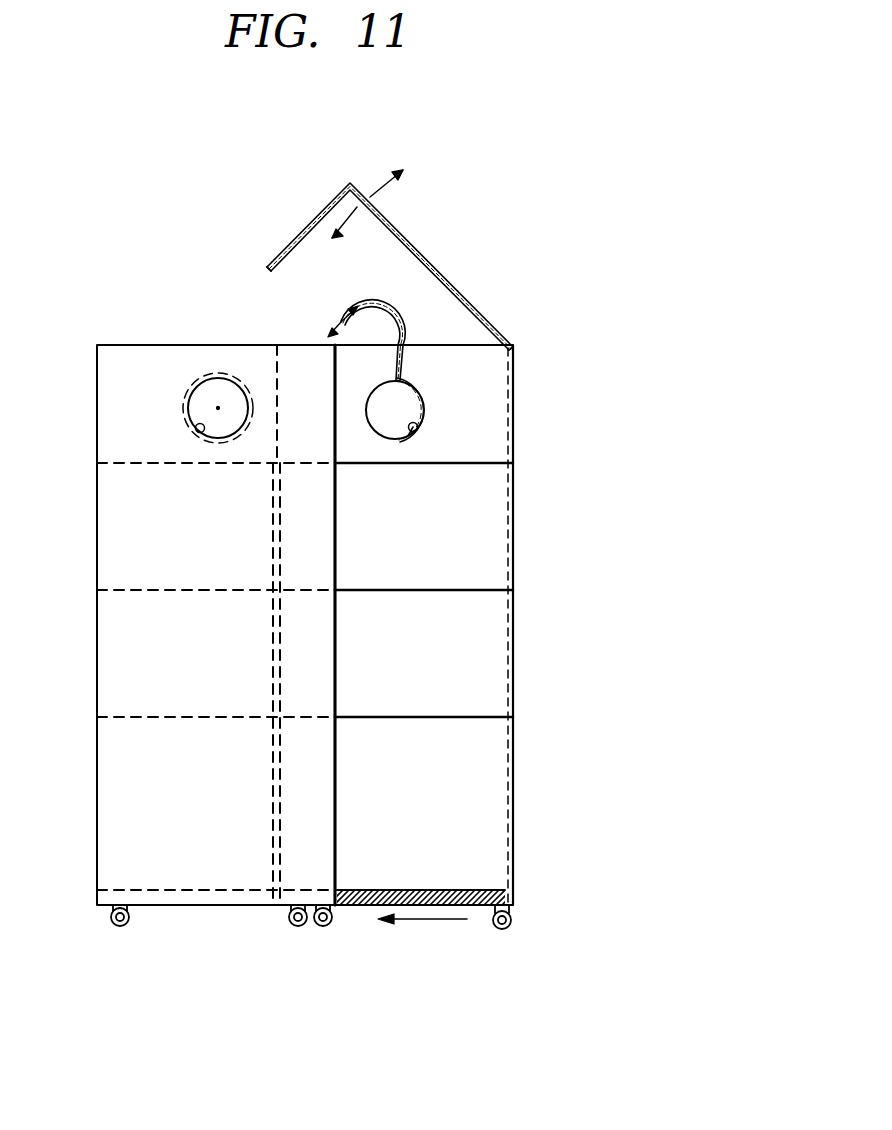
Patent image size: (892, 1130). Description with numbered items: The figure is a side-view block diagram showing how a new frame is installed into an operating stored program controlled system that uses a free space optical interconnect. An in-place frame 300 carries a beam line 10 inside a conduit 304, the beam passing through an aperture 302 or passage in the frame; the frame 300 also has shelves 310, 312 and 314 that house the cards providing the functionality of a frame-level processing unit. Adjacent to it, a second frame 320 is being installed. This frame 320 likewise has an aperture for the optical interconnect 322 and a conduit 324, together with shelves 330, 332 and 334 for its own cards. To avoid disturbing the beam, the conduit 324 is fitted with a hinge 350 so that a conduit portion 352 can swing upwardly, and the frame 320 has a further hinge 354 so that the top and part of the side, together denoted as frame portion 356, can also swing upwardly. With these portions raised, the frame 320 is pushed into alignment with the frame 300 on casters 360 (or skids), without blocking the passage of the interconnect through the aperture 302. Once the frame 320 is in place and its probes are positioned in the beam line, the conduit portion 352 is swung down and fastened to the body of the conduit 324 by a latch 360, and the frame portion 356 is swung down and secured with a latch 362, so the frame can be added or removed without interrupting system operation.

The beam line 10 is at (218, 408).
The frame 300 is at (97, 628).
The aperture 302 is at (196, 428).
The conduit 304 is at (185, 408).
The shelf 310 is at (188, 491).
The shelf 312 is at (188, 618).
The shelf 314 is at (188, 745).
The frame 320 is at (555, 626).
The aperture for the optical interconnect 322 is at (448, 480).
The conduit 324 is at (447, 438).
The shelf 330 is at (391, 496).
The shelf 332 is at (431, 622).
The shelf 334 is at (408, 749).
The hinge 350 is at (403, 373).
The conduit portion 352 is at (378, 278).
The hinge 354 is at (510, 352).
The frame portion 356 is at (396, 218).
The casters 360 is at (341, 322).
The latch 362 is at (262, 268).